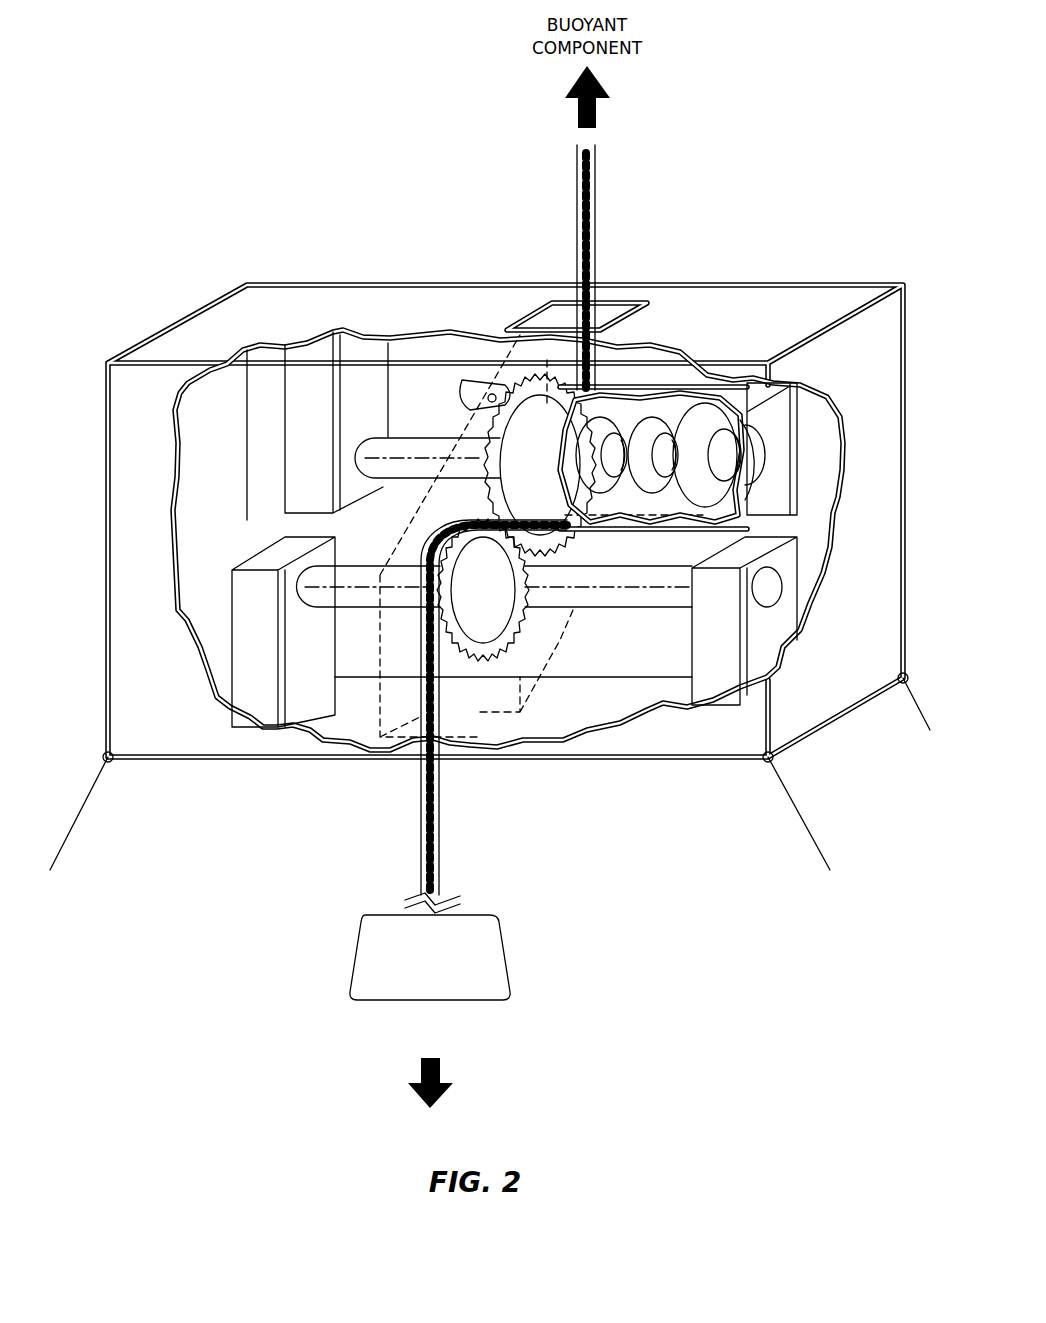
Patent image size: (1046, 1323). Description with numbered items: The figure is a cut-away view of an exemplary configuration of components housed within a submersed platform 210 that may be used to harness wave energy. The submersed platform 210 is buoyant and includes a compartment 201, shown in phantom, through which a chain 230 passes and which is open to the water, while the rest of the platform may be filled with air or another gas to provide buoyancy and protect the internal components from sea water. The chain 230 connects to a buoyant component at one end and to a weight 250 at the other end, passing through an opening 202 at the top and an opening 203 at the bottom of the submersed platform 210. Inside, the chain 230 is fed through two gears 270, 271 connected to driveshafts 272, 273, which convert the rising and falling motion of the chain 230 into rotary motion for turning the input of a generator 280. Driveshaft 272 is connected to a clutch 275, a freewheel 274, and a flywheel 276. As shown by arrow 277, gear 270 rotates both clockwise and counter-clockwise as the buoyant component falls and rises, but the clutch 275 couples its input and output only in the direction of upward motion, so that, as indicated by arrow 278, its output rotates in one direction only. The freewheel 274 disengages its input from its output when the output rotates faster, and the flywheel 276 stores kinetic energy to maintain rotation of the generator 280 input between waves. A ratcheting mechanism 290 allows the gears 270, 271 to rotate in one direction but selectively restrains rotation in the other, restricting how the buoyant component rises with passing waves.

The compartment 201 is at (560, 640).
The opening at the top 202 is at (620, 330).
The opening at the bottom 203 is at (510, 757).
The submersed platform 210 is at (289, 236).
The chain 230 is at (418, 828).
The weight 250 is at (445, 971).
The gear 270 is at (548, 388).
The gear 271 is at (510, 627).
The driveshaft 272 is at (410, 450).
The driveshaft 273 is at (333, 592).
The freewheel 274 is at (655, 415).
The clutch 275 is at (612, 415).
The flywheel 276 is at (705, 405).
The arrow 277 is at (600, 470).
The arrow 278 is at (628, 470).
The generator 280 is at (790, 392).
The ratcheting mechanism 290 is at (496, 383).